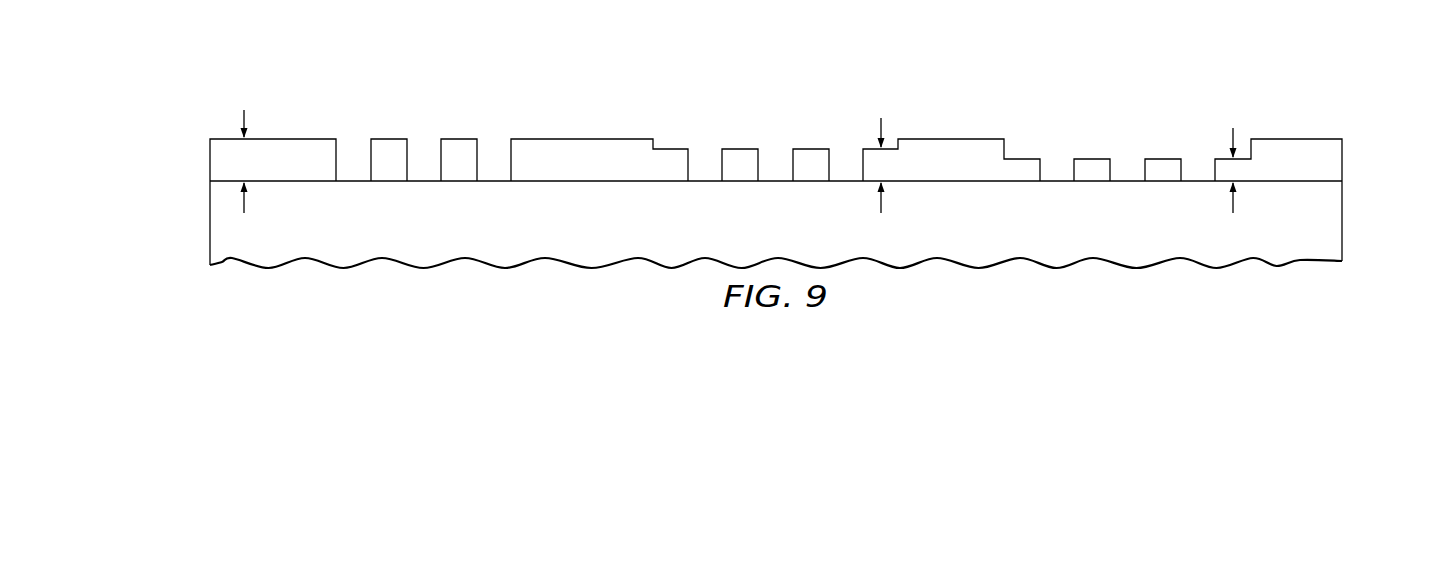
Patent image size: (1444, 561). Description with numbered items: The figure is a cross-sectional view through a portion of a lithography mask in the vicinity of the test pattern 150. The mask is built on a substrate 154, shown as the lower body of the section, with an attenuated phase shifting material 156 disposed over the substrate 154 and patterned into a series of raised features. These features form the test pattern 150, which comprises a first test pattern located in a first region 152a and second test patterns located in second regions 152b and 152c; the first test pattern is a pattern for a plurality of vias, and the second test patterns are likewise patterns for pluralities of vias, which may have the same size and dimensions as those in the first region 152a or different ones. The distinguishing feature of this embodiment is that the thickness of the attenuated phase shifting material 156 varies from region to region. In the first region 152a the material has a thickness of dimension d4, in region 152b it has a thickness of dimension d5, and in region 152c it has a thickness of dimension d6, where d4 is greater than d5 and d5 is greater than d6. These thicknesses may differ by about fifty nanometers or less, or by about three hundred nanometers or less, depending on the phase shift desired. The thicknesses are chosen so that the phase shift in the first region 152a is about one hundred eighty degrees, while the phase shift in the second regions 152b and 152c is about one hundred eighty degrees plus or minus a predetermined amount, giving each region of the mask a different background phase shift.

The test pattern 150 is at (574, 61).
The first region 152a is at (406, 104).
The second region 152b is at (758, 104).
The second region 152c is at (1145, 104).
The substrate 154 is at (1343, 213).
The attenuated phase shifting material 156 is at (1343, 158).
The dimension d4 is at (248, 149).
The dimension d5 is at (887, 153).
The dimension d6 is at (1238, 158).